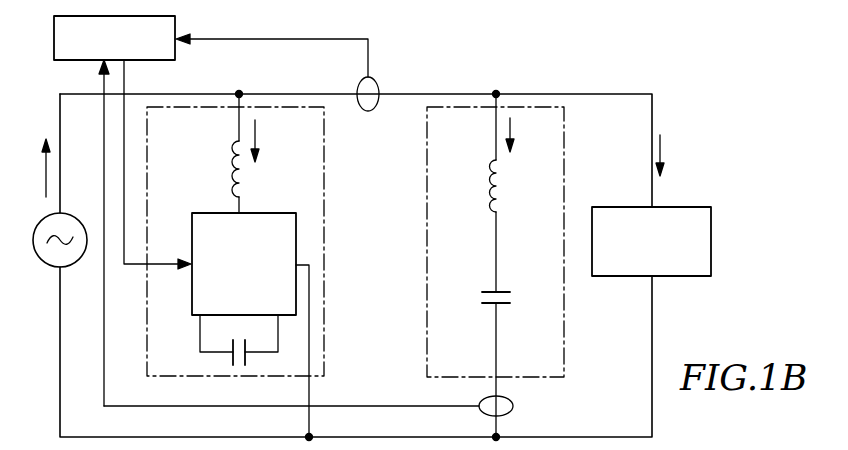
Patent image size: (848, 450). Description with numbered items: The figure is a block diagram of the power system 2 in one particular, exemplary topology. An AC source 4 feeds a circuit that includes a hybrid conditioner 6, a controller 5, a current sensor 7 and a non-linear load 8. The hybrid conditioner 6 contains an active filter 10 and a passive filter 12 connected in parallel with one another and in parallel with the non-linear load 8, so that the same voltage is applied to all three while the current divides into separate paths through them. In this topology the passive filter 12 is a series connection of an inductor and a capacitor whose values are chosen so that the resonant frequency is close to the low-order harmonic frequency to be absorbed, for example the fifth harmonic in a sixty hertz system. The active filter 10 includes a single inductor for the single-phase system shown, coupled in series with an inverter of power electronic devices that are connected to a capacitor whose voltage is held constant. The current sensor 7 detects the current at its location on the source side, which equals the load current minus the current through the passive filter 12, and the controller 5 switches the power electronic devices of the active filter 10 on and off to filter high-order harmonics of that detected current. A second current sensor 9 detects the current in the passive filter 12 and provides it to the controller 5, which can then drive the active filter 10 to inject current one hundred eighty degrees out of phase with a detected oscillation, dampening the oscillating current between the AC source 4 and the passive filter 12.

The power system 2 is at (470, 74).
The AC source 4 is at (78, 215).
The controller 5 is at (176, 23).
The hybrid conditioner 6 is at (412, 250).
The current sensor 7 is at (379, 82).
The non-linear load 8 is at (712, 218).
The current sensor 9 is at (513, 404).
The active filter 10 is at (325, 182).
The passive filter 12 is at (565, 192).